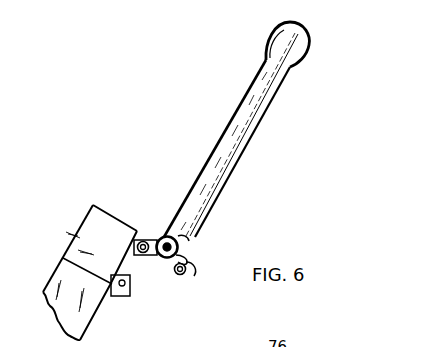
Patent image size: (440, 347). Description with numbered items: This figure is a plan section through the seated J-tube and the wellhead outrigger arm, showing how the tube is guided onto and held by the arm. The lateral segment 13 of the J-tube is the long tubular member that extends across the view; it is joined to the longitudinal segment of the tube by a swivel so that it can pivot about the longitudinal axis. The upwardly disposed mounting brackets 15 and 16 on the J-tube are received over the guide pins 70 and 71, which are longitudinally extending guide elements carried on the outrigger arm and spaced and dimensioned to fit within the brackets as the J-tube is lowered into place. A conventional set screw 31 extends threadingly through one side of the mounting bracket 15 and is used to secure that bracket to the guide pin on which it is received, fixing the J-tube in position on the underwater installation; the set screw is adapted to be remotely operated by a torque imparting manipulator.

The lateral segment 13 is at (206, 165).
The mounting bracket 15 is at (192, 270).
The mounting bracket 16 is at (161, 237).
The set screw 31 is at (181, 275).
The guide pin 70 is at (119, 293).
The guide pin 71 is at (141, 257).